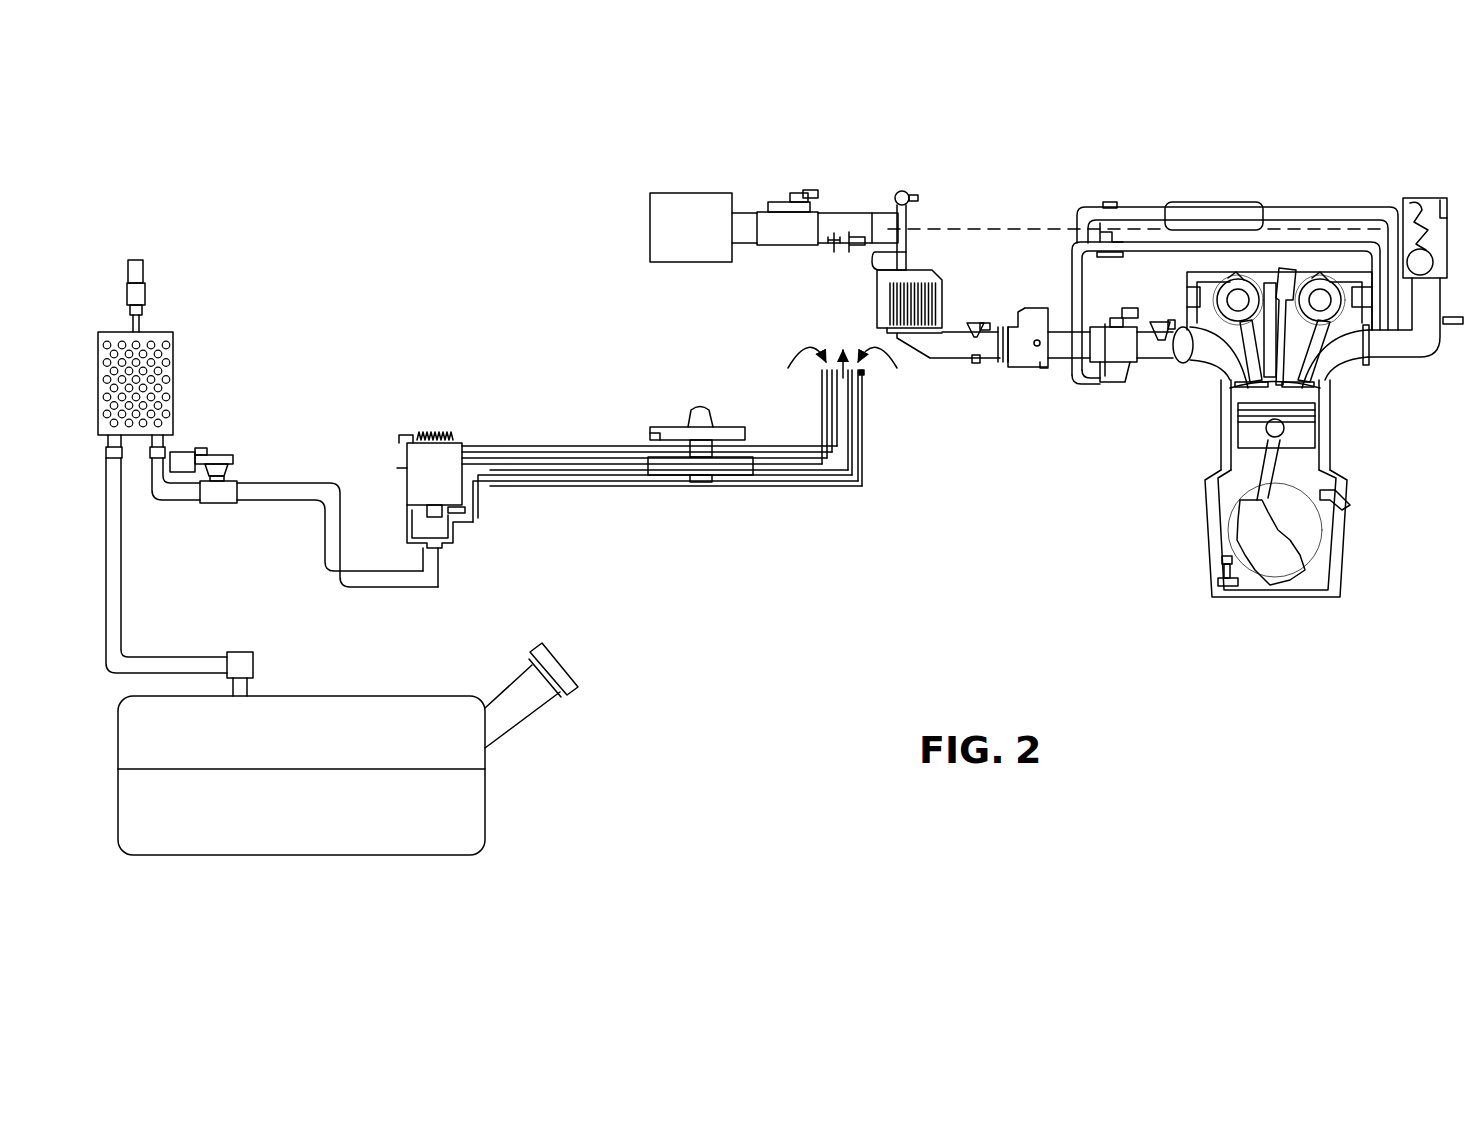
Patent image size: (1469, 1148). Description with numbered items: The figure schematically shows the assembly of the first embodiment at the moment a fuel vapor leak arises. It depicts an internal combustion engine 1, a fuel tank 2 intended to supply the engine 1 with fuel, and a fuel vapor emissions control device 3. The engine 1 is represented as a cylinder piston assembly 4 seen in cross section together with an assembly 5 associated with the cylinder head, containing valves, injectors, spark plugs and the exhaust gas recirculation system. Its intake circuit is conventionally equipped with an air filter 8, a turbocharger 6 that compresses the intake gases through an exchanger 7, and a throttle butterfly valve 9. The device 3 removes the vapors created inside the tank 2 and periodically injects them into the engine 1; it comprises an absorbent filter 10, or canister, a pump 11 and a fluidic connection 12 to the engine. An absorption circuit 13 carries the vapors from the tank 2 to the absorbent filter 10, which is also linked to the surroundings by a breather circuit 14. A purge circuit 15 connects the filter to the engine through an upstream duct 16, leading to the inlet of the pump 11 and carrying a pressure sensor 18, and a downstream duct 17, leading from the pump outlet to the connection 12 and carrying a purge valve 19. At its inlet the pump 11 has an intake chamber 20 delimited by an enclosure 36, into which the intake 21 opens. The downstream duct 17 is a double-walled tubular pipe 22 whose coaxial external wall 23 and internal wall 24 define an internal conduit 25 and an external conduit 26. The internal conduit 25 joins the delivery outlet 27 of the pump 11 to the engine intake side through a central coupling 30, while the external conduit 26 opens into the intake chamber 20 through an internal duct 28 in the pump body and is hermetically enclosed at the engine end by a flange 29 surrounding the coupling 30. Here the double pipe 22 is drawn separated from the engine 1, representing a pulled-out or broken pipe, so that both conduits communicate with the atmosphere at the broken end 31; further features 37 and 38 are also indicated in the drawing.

The internal combustion engine 1 is at (1352, 423).
The fuel tank 2 is at (465, 815).
The fuel vapor emissions control device 3 is at (327, 240).
The cylinder piston assembly 4 is at (1245, 460).
The assembly associated with the cylinder head 5 is at (1306, 198).
The turbocharger 6 is at (909, 196).
The exchanger 7 is at (896, 337).
The air filter 8 is at (655, 215).
The throttle butterfly valve 9 is at (1022, 355).
The absorbent filter 10 is at (170, 405).
The pump 11 is at (412, 468).
The fluidic connection 12 is at (810, 246).
The absorption circuit 13 is at (150, 603).
The breather circuit 14 is at (158, 293).
The purge circuit 15 is at (422, 382).
The upstream duct 16 is at (352, 594).
The downstream duct 17 is at (776, 502).
The pressure sensor 18 is at (235, 459).
The purge valve 19 is at (700, 408).
The intake chamber 20 is at (445, 540).
The intake 21 is at (427, 513).
The double-walled tubular pipe 22 is at (604, 442).
The external wall 23 is at (860, 437).
The internal wall 24 is at (798, 460).
The internal conduit 25 is at (842, 402).
The external conduit 26 is at (827, 444).
The delivery outlet 27 is at (473, 464).
The internal duct 28 is at (480, 508).
The flange 29 is at (860, 228).
The central coupling 30 is at (840, 228).
The broken end 31 is at (860, 373).
The enclosure 36 is at (408, 518).
The line 37 is at (495, 468).
The line 38 is at (482, 484).